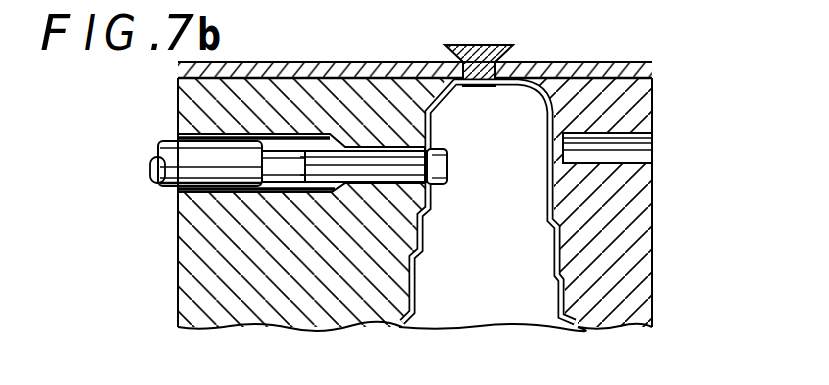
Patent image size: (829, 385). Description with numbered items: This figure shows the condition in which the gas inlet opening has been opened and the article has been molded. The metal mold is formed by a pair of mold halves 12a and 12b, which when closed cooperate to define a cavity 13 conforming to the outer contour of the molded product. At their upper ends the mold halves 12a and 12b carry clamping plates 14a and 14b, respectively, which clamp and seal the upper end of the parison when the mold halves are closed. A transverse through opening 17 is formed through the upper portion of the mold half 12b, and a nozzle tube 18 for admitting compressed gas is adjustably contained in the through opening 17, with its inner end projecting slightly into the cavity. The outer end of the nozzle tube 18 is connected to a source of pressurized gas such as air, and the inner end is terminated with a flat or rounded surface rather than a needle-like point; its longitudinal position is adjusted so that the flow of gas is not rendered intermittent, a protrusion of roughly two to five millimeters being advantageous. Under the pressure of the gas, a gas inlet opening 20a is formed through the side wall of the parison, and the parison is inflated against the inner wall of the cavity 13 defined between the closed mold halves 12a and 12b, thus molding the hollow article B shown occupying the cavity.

The cavity 13 is at (412, 165).
The clamping plate 14a is at (605, 68).
The clamping plate 14b is at (393, 73).
The mold half 12a is at (630, 206).
The mold half 12b is at (213, 264).
The transverse through opening 17 is at (297, 185).
The nozzle tube 18 is at (338, 142).
The gas inlet opening 20a is at (447, 172).
The hollow article B is at (562, 248).